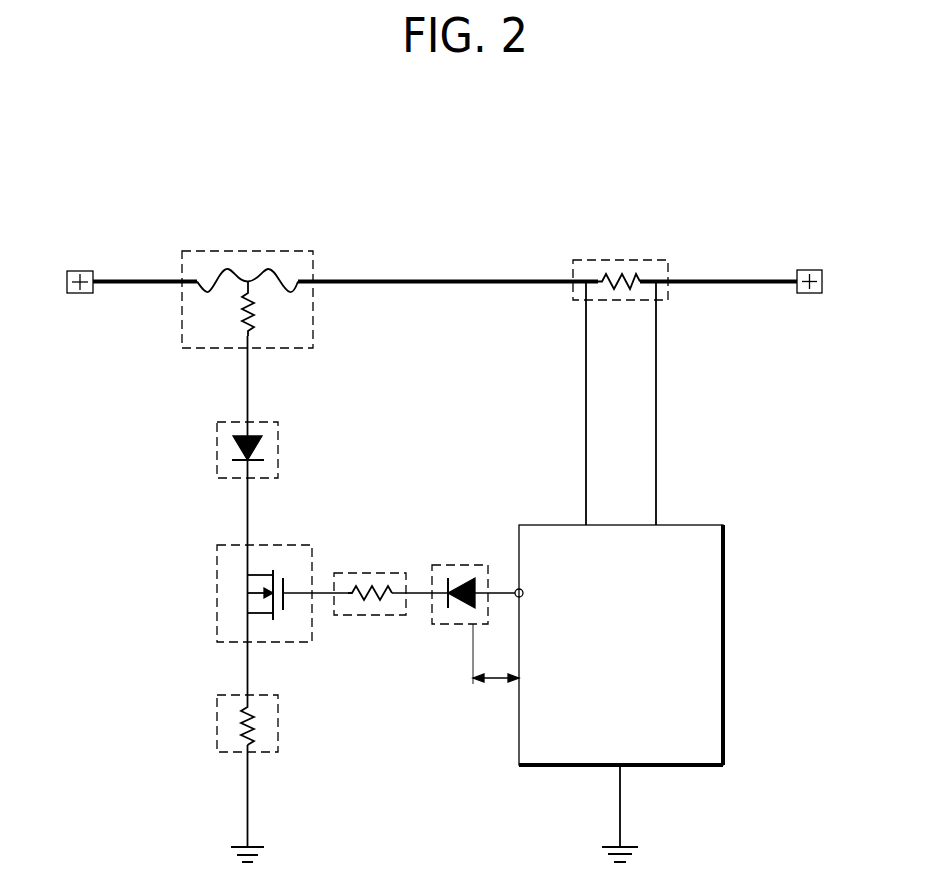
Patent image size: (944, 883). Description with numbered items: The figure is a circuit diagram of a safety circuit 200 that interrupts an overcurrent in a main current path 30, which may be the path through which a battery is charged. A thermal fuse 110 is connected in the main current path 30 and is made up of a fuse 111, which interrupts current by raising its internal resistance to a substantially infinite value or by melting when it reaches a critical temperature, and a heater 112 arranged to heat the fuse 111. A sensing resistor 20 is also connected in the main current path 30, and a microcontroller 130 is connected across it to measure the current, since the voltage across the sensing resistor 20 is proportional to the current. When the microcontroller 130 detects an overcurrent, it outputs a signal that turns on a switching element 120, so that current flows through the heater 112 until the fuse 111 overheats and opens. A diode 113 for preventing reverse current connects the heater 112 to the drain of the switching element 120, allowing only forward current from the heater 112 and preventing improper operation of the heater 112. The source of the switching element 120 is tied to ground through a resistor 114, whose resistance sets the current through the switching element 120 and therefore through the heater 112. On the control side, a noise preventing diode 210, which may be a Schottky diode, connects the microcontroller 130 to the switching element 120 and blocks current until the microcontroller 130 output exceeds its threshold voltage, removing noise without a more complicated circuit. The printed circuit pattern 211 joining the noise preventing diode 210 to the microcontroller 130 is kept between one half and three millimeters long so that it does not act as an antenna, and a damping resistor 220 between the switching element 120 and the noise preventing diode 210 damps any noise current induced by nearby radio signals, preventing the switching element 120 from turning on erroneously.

The safety circuit 200 is at (833, 176).
The main current path 30 is at (447, 280).
The sensing resistor 20 is at (620, 258).
The thermal fuse 110 is at (213, 295).
The fuse 111 is at (197, 287).
The heater 112 is at (241, 320).
The diode for preventing reverse current 113 is at (217, 449).
The switching element 120 is at (217, 593).
The resistor 114 is at (217, 725).
The damping resistor 220 is at (368, 572).
The noise preventing diode 210 is at (458, 562).
The printed circuit pattern 211 is at (495, 683).
The microcontroller 130 is at (704, 523).